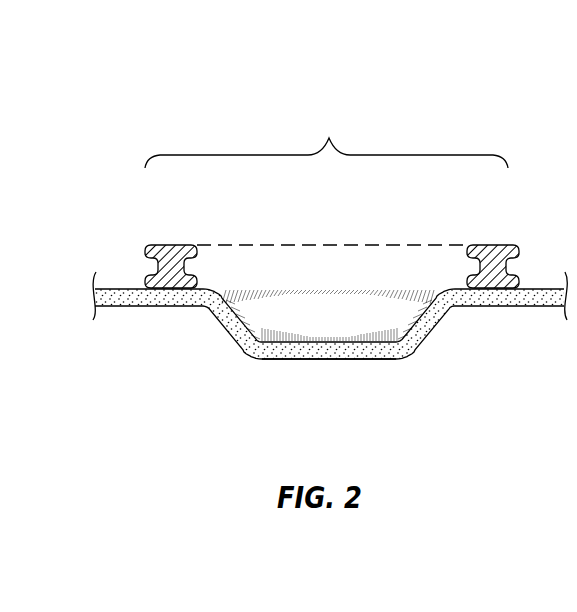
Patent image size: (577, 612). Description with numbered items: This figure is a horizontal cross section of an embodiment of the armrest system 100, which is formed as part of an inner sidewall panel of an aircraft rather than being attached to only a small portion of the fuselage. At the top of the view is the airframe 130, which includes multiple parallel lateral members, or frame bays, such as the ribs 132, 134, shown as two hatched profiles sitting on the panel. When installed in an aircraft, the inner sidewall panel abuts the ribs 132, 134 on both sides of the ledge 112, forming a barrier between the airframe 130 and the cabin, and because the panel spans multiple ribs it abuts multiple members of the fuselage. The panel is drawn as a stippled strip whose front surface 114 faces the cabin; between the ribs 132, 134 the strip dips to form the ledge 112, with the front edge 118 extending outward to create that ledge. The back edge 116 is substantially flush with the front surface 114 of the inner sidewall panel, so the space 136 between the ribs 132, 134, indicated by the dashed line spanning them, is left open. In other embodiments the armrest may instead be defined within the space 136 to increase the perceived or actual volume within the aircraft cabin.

The armrest system 100 is at (155, 91).
The ledge 112 is at (292, 326).
The front surface 114 is at (180, 310).
The back edge 116 is at (367, 289).
The front edge 118 is at (345, 360).
The airframe 130 is at (326, 138).
The rib 132 is at (158, 245).
The rib 134 is at (507, 244).
The space 136 is at (290, 263).